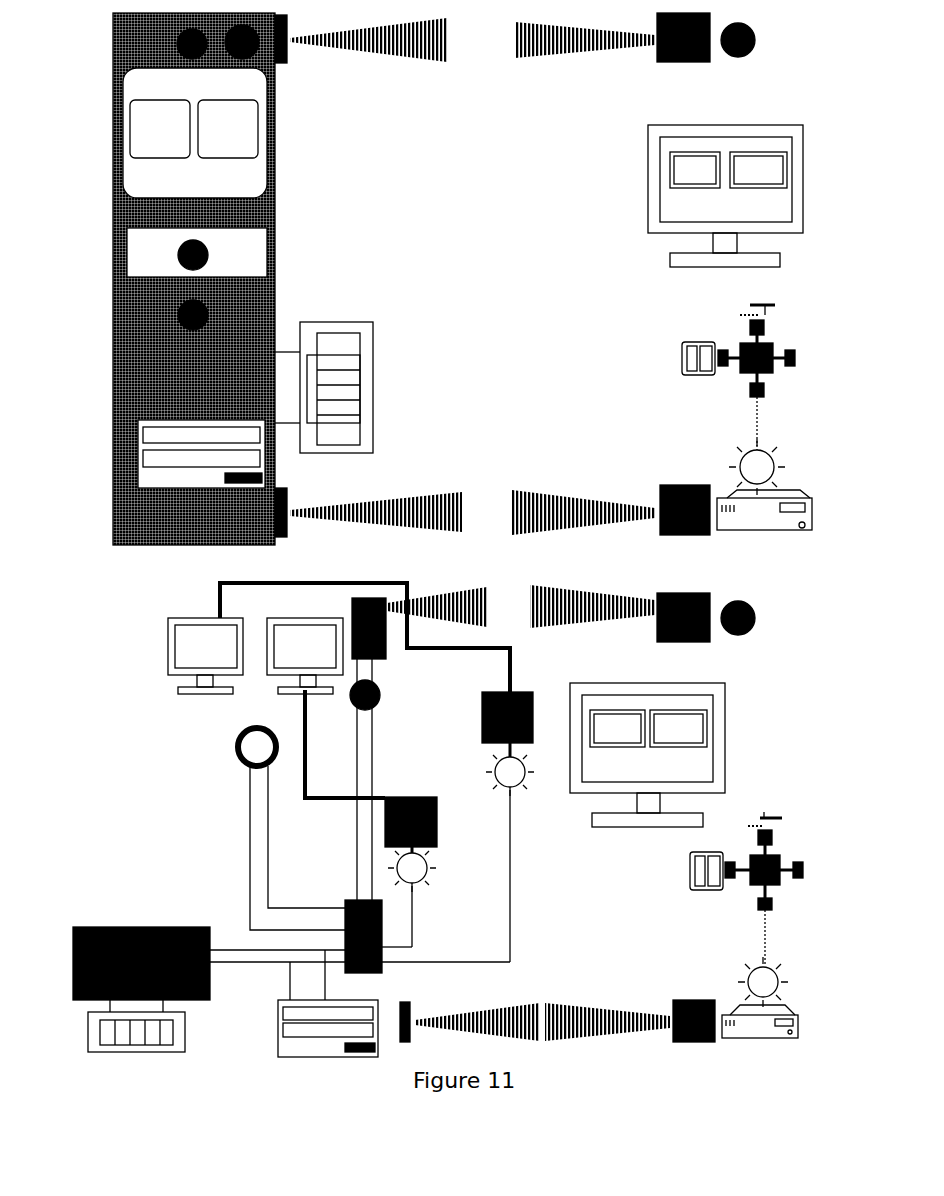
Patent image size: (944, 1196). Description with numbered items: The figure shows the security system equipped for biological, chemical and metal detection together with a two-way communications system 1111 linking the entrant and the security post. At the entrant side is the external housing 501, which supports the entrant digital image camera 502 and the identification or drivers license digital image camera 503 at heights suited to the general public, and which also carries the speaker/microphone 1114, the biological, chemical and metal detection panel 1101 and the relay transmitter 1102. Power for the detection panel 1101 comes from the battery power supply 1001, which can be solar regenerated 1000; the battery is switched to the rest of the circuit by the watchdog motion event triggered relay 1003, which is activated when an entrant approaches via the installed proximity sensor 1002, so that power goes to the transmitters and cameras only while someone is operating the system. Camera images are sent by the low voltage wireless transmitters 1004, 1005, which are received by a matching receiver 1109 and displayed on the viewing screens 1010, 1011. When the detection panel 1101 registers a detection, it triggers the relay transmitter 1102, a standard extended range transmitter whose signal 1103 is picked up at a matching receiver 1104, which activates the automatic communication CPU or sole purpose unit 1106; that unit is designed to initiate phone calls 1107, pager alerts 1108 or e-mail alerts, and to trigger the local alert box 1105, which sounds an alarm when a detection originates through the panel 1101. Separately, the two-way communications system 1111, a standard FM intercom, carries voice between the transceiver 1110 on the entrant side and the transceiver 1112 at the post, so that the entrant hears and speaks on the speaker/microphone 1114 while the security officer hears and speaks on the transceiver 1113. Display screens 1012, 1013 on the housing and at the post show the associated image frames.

The external housing 501 is at (194, 279).
The identification or drivers license digital image camera 503 is at (197, 153).
The speaker/microphone 1114 is at (275, 367).
The first display screen 1013 is at (186, 397).
The second display screen 1012 is at (270, 397).
The transceiver 1110 is at (330, 337).
The two-way communications system 1111 is at (472, 323).
The transceiver 1112 is at (683, 341).
The transceiver 1113 is at (761, 329).
The pager alerts 1108 is at (686, 476).
The viewing screen 1010 is at (655, 449).
The viewing screen 1011 is at (718, 449).
The receiver 1109 is at (773, 607).
The phone calls 1107 is at (683, 616).
The automatic communication CPU or sole purpose unit 1106 is at (745, 702).
The receiver module 1104 is at (687, 753).
The local alert box 1105 is at (764, 778).
The proximity sensor 1002 is at (260, 615).
The biological, chemical and metal detection panel 1101 is at (258, 726).
The relay transmitter 1102 is at (359, 756).
The wireless signal 1103 is at (480, 765).
The solar regeneration 1000 is at (206, 674).
The low voltage wireless transmitter 1005 is at (485, 744).
The low voltage wireless transmitter 1004 is at (411, 806).
The entrant digital image camera 502 is at (433, 895).
The battery power supply 1001 is at (209, 950).
The watchdog motion event triggered relay 1003 is at (362, 948).